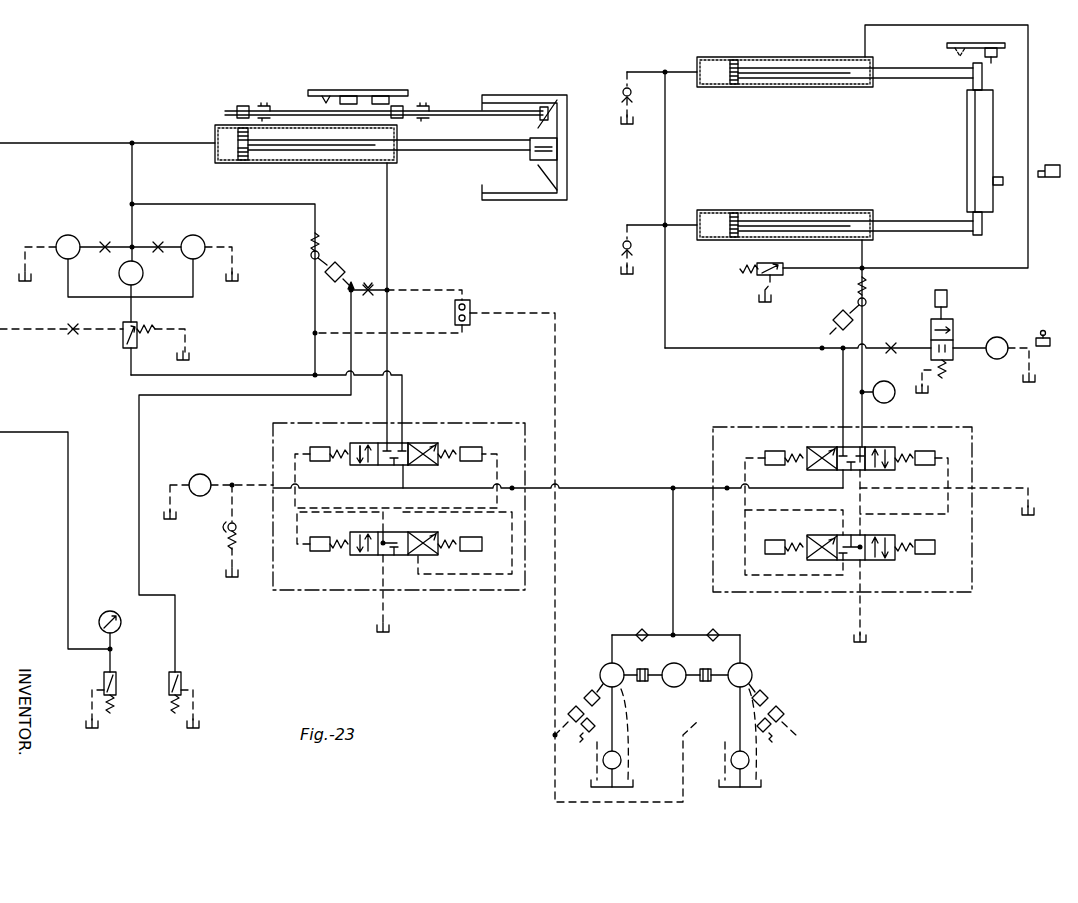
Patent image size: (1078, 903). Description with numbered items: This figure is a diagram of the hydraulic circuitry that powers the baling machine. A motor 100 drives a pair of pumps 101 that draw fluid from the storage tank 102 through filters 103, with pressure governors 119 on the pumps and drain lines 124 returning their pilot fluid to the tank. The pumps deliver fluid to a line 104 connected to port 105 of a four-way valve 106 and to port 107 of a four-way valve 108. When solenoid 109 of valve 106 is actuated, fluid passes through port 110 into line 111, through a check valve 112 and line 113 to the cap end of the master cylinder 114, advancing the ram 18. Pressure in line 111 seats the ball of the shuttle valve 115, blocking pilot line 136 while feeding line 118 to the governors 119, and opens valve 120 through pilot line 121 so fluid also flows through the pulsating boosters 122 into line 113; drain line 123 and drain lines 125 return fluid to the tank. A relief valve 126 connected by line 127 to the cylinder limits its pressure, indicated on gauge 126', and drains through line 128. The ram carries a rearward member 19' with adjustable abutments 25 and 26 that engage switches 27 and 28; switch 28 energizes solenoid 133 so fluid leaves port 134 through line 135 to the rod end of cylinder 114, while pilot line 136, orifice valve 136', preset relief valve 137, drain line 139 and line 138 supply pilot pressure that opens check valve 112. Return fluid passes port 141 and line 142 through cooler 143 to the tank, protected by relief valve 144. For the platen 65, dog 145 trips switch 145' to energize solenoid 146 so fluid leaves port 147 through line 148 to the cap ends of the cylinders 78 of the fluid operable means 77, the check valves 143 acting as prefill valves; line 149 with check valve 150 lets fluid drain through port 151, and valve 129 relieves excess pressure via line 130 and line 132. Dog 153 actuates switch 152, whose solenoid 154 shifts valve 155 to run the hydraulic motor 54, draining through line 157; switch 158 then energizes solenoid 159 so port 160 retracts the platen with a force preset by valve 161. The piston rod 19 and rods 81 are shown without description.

The line 127 is at (84, 143).
The line 113 is at (188, 204).
The pulsating boosters 122 is at (77, 230).
The drain lines 125 is at (31, 243).
The storage tank 102 is at (25, 282).
The pilot line 121 is at (40, 327).
The valve 120 is at (123, 347).
The drain line 123 is at (186, 337).
The line 111 is at (403, 377).
The check valve 112 is at (322, 260).
The line 135 is at (388, 232).
The pilot line 136 is at (406, 281).
The orifice valve 136' is at (388, 315).
The shuttle valve 115 is at (471, 310).
The line 118 is at (557, 364).
The line 138 is at (139, 425).
The master cylinder 114 is at (340, 165).
The abutment 25 is at (237, 109).
The abutment 26 is at (405, 118).
The switch 27 is at (343, 98).
The switch 28 is at (380, 97).
The rearward member 19' is at (494, 101).
The piston rod 19 is at (515, 141).
The ram 18 is at (568, 166).
The cooler 143 is at (200, 474).
The line 142 is at (257, 485).
The relief valve 144 is at (228, 528).
The four-way valve 106 is at (482, 424).
The port 110 is at (462, 447).
The port 134 is at (378, 443).
The port 141 is at (378, 466).
The port 105 is at (405, 466).
The solenoid 133 is at (320, 552).
The solenoid 109 is at (468, 552).
The four-way valve 108 is at (740, 427).
The port 147 is at (838, 447).
The port 160 is at (866, 447).
The port 107 is at (838, 471).
The port 151 is at (864, 471).
The solenoid 146 is at (778, 555).
The solenoid 159 is at (925, 555).
The line 104 is at (673, 488).
The pumps 101 is at (605, 665).
The motor 100 is at (673, 663).
The filters 103 is at (622, 760).
The pressure governors 119 is at (569, 711).
The drain lines 124 is at (597, 776).
The gauge 126' is at (129, 638).
The relief valve 126 is at (130, 683).
The drain line 128 is at (92, 706).
The preset relief valve 137 is at (181, 676).
The drain line 139 is at (193, 700).
The fluid operable means 77 is at (787, 52).
The cylinders 78 is at (718, 57).
The piston rods 81 is at (915, 66).
The line 130 is at (975, 268).
The platen 65 is at (999, 117).
The switch 145' is at (992, 54).
The dog 145 is at (1008, 64).
The dog 153 is at (1020, 167).
The switch 152 is at (1058, 165).
The valve 129 is at (780, 263).
The line 132 is at (772, 288).
The check valve 150 is at (833, 318).
The line 148 is at (666, 336).
The line 149 is at (822, 347).
The valve 161 is at (878, 403).
The solenoid 154 is at (948, 297).
The valve 155 is at (953, 332).
The hydraulic motor 54 is at (999, 338).
The drain line 157 is at (1028, 370).
The switch 158 is at (1056, 320).